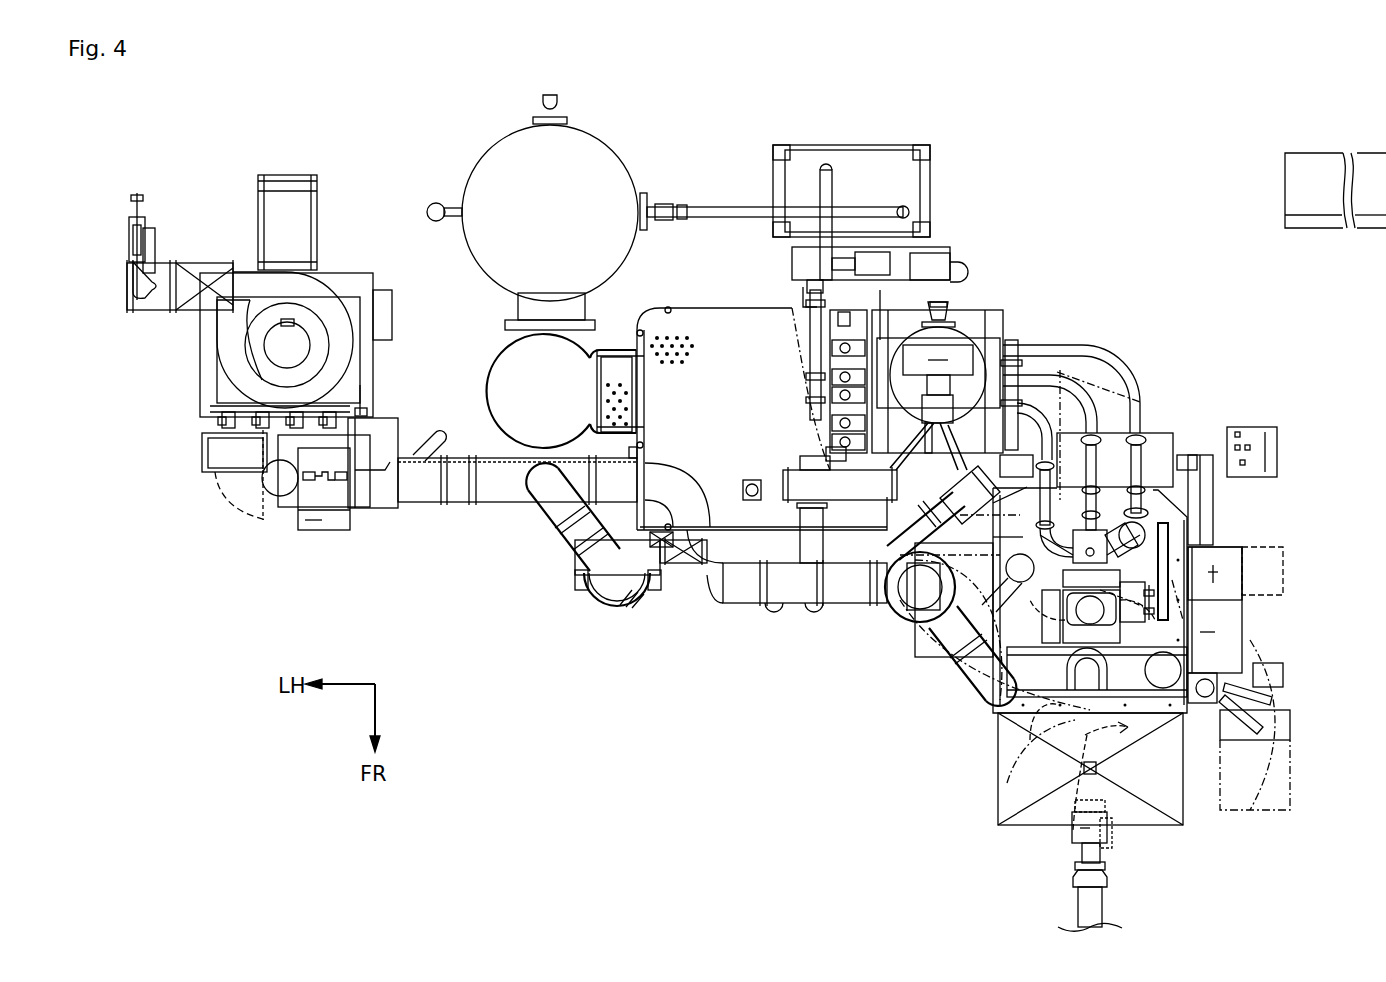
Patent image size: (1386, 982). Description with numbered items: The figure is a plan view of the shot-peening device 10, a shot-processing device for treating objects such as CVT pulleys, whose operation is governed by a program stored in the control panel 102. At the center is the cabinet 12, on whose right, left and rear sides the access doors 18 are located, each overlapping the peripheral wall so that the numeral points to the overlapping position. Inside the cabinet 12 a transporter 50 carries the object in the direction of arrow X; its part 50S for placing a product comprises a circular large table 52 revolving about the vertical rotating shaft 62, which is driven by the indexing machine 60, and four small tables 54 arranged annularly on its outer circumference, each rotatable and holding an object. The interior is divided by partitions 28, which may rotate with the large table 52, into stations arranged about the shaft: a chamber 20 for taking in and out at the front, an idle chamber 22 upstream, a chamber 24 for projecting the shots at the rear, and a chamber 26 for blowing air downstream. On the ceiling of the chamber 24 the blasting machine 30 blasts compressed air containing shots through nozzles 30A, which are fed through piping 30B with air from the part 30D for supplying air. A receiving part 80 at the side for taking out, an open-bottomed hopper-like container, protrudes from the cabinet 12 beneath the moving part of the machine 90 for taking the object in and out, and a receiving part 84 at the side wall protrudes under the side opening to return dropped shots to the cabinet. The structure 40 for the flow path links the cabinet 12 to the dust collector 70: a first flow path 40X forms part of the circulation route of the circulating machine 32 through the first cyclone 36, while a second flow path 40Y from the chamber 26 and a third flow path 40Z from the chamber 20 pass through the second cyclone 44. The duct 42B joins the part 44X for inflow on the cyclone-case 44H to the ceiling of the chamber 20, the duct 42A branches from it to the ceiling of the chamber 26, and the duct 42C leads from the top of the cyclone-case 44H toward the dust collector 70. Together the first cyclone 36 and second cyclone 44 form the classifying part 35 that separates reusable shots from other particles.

The shot-peening device 10 is at (1198, 195).
The cabinet 12 is at (1193, 559).
The access door 18 is at (1132, 474).
The chamber for taking in and out 20 is at (1214, 797).
The idle chamber 22 is at (1225, 575).
The chamber for projecting the shots 24 is at (1163, 470).
The chamber for blowing air 26 is at (973, 690).
The partition 28 is at (953, 513).
The blasting machine 30 is at (1058, 334).
The nozzles 30A is at (1105, 470).
The piping 30B is at (1028, 472).
The part for supplying air 30D is at (972, 157).
The circulating machine 32 is at (812, 500).
The classifying part 35 is at (708, 607).
The first cyclone 36 is at (892, 605).
The structure for the flow path 40 is at (697, 652).
The first flow path 40X is at (812, 470).
The second flow path 40Y is at (937, 640).
The third flow path 40Z is at (1027, 725).
The duct 42A is at (913, 637).
The duct 42B is at (760, 542).
The duct 42C is at (550, 507).
The second cyclone 44 is at (592, 612).
The cyclone-case 44H is at (645, 597).
The part for inflow 44X is at (672, 565).
The transporter 50 is at (1187, 722).
The part for placing a product 50S is at (1087, 735).
The large table 52 is at (1007, 783).
The small tables 54 is at (973, 647).
The indexing machine 60 is at (1010, 697).
The rotating shaft 62 is at (1250, 640).
The dust collector 70 is at (340, 285).
The receiving part at the side for taking out 80 is at (1023, 757).
The receiving part at the side wall 84 is at (1178, 447).
The machine for taking the object in and out 90 is at (1103, 905).
The control panel 102 is at (1308, 232).